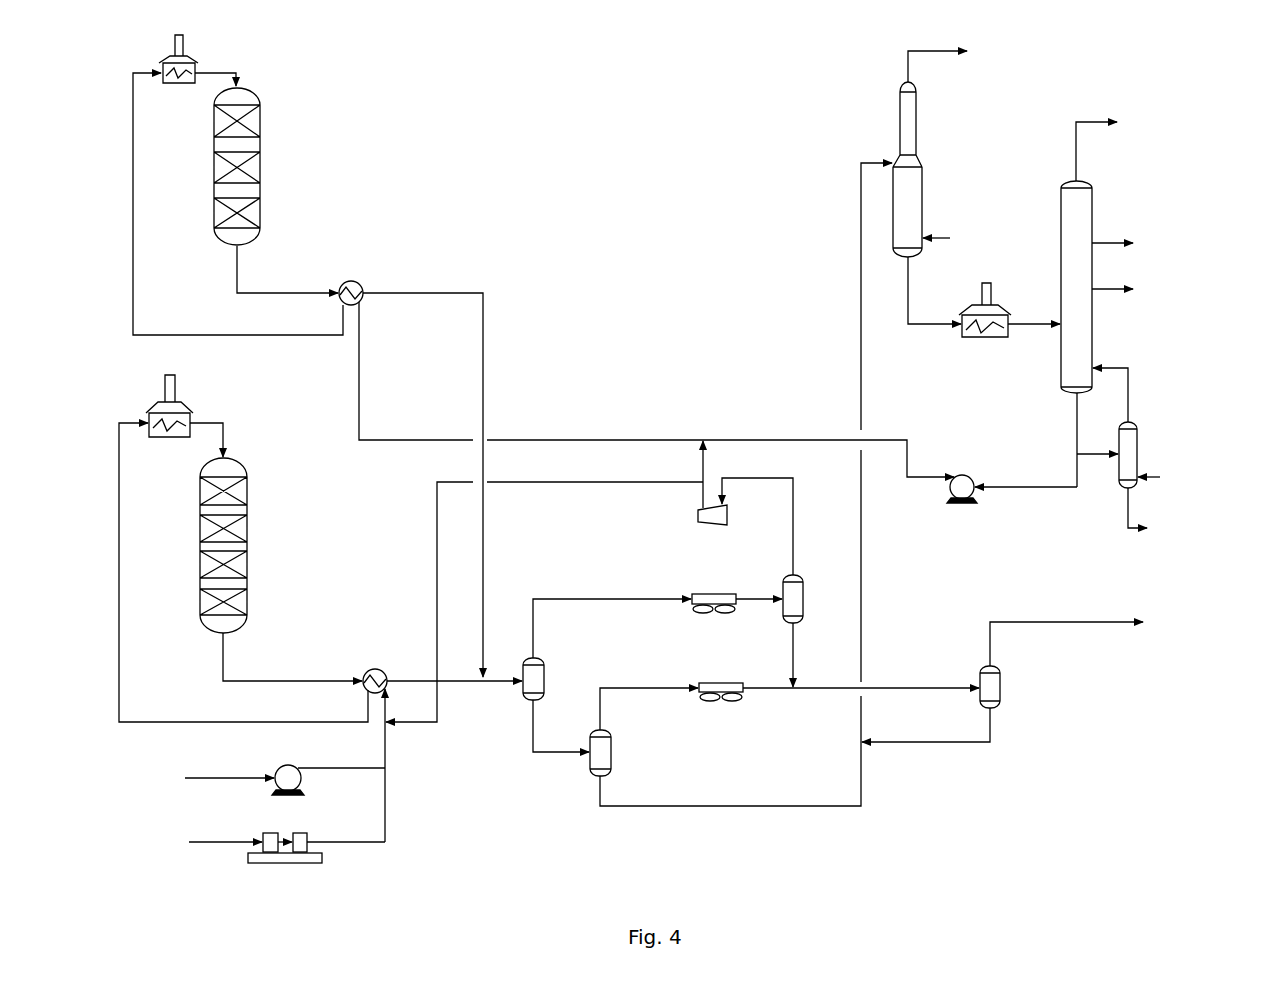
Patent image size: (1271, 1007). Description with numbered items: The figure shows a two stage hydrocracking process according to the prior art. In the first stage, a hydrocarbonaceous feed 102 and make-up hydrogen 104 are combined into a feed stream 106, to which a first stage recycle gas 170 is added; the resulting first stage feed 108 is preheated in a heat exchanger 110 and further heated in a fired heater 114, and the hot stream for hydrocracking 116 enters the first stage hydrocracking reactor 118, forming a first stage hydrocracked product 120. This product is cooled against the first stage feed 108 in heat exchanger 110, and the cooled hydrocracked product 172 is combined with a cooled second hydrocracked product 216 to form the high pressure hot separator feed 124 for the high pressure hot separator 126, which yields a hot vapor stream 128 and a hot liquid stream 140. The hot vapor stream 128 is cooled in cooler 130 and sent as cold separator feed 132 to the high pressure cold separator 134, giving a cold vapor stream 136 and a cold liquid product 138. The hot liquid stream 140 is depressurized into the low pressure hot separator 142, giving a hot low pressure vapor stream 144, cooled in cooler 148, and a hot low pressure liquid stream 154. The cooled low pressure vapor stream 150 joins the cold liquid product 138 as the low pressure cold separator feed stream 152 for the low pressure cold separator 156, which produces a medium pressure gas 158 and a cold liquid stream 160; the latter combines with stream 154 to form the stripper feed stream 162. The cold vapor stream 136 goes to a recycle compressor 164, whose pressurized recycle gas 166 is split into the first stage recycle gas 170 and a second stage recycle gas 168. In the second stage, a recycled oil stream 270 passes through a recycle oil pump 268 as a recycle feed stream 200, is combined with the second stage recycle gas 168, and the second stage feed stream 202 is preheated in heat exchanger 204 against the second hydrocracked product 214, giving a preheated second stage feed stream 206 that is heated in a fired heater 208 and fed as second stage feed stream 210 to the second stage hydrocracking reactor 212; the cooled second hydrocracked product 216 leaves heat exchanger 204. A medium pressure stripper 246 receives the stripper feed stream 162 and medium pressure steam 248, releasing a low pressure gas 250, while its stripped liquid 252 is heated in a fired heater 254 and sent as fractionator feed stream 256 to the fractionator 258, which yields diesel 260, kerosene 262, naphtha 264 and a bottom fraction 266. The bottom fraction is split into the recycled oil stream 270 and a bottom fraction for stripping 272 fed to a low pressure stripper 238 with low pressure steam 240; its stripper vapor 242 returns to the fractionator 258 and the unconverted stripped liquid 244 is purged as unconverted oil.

The hydrocarbonaceous feed 102 is at (225, 777).
The make-up hydrogen 104 is at (225, 841).
The feed stream 106 is at (386, 751).
The first stage feed 108 is at (386, 708).
The heat exchanger 110 is at (378, 669).
The fired heater 114 is at (167, 438).
The hot stream for hydrocracking 116 is at (223, 422).
The first stage hydrocracking reactor 118 is at (247, 580).
The first stage hydrocracked product 120 is at (302, 680).
The high pressure hot separator feed 124 is at (500, 680).
The high pressure hot separator 126 is at (544, 668).
The hot vapor stream 128 is at (590, 598).
The cooler 130 is at (704, 593).
The cold separator feed 132 is at (757, 601).
The high pressure cold separator 134 is at (803, 586).
The cold vapor stream 136 is at (793, 567).
The cold liquid product 138 is at (793, 651).
The hot liquid stream 140 is at (533, 737).
The low pressure hot separator 142 is at (611, 748).
The hot low pressure vapor stream 144 is at (620, 687).
The cooler 148 is at (712, 682).
The cooled low pressure vapor stream 150 is at (768, 687).
The low pressure cold separator feed stream 152 is at (937, 686).
The hot low pressure liquid stream 154 is at (772, 805).
The low pressure cold separator 156 is at (1000, 688).
The medium pressure gas 158 is at (1082, 621).
The cold liquid stream 160 is at (935, 741).
The stripper feed stream 162 is at (862, 164).
The recycle compressor 164 is at (710, 523).
The pressurized recycle gas 166 is at (703, 499).
The second stage recycle gas 168 is at (703, 462).
The first stage recycle gas 170 is at (437, 520).
The cooled hydrocracked product 172 is at (420, 680).
The recycle feed stream 200 is at (897, 439).
The second stage feed stream 202 is at (426, 439).
The heat exchanger 204 is at (353, 281).
The preheated second stage feed stream 206 is at (133, 148).
The fired heater 208 is at (178, 84).
The second stage feed stream 210 is at (222, 72).
The second stage hydrocracking reactor 212 is at (260, 190).
The second hydrocracked product 214 is at (237, 283).
The cooled second hydrocracked product 216 is at (483, 350).
The low pressure stripper 238 is at (1148, 420).
The low pressure steam 240 is at (1160, 462).
The stripper vapor 242 is at (1128, 392).
The unconverted stripped liquid 244 is at (1138, 502).
The medium pressure stripper 246 is at (922, 181).
The medium pressure steam 248 is at (956, 221).
The low pressure gas 250 is at (928, 51).
The stripped liquid 252 is at (937, 323).
The fired heater 254 is at (985, 338).
The fractionator feed stream 256 is at (1030, 323).
The fractionator 258 is at (1092, 352).
The diesel 260 is at (1105, 289).
The kerosene 262 is at (1105, 243).
The naphtha 264 is at (1088, 122).
The bottom fraction 266 is at (1077, 433).
The recycle oil pump 268 is at (962, 474).
The recycled oil stream 270 is at (1018, 486).
The bottom fraction for stripping 272 is at (1100, 453).